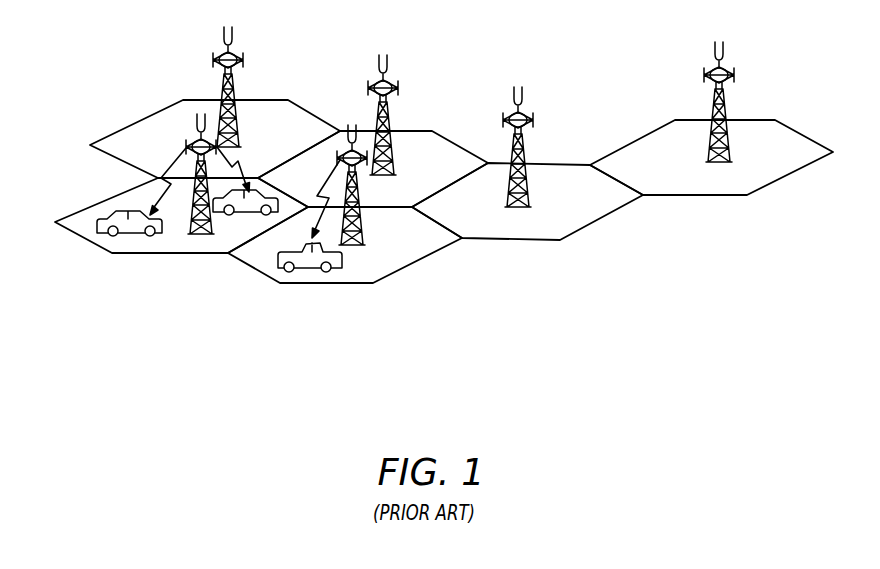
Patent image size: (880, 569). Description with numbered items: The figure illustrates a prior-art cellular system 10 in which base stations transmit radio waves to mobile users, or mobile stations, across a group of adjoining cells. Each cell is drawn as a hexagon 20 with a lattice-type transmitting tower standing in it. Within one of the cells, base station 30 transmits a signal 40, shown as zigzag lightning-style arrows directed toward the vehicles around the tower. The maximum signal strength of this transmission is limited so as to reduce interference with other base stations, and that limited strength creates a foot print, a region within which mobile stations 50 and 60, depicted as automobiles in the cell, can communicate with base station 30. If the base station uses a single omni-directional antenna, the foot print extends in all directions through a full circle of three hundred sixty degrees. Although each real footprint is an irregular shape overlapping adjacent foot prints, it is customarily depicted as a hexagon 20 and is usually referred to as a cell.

The cellular system 10 is at (436, 318).
The hexagon 20 is at (180, 253).
The base station 30 is at (188, 139).
The signal 40 is at (166, 170).
The mobile station 50 is at (128, 236).
The mobile station 60 is at (229, 214).